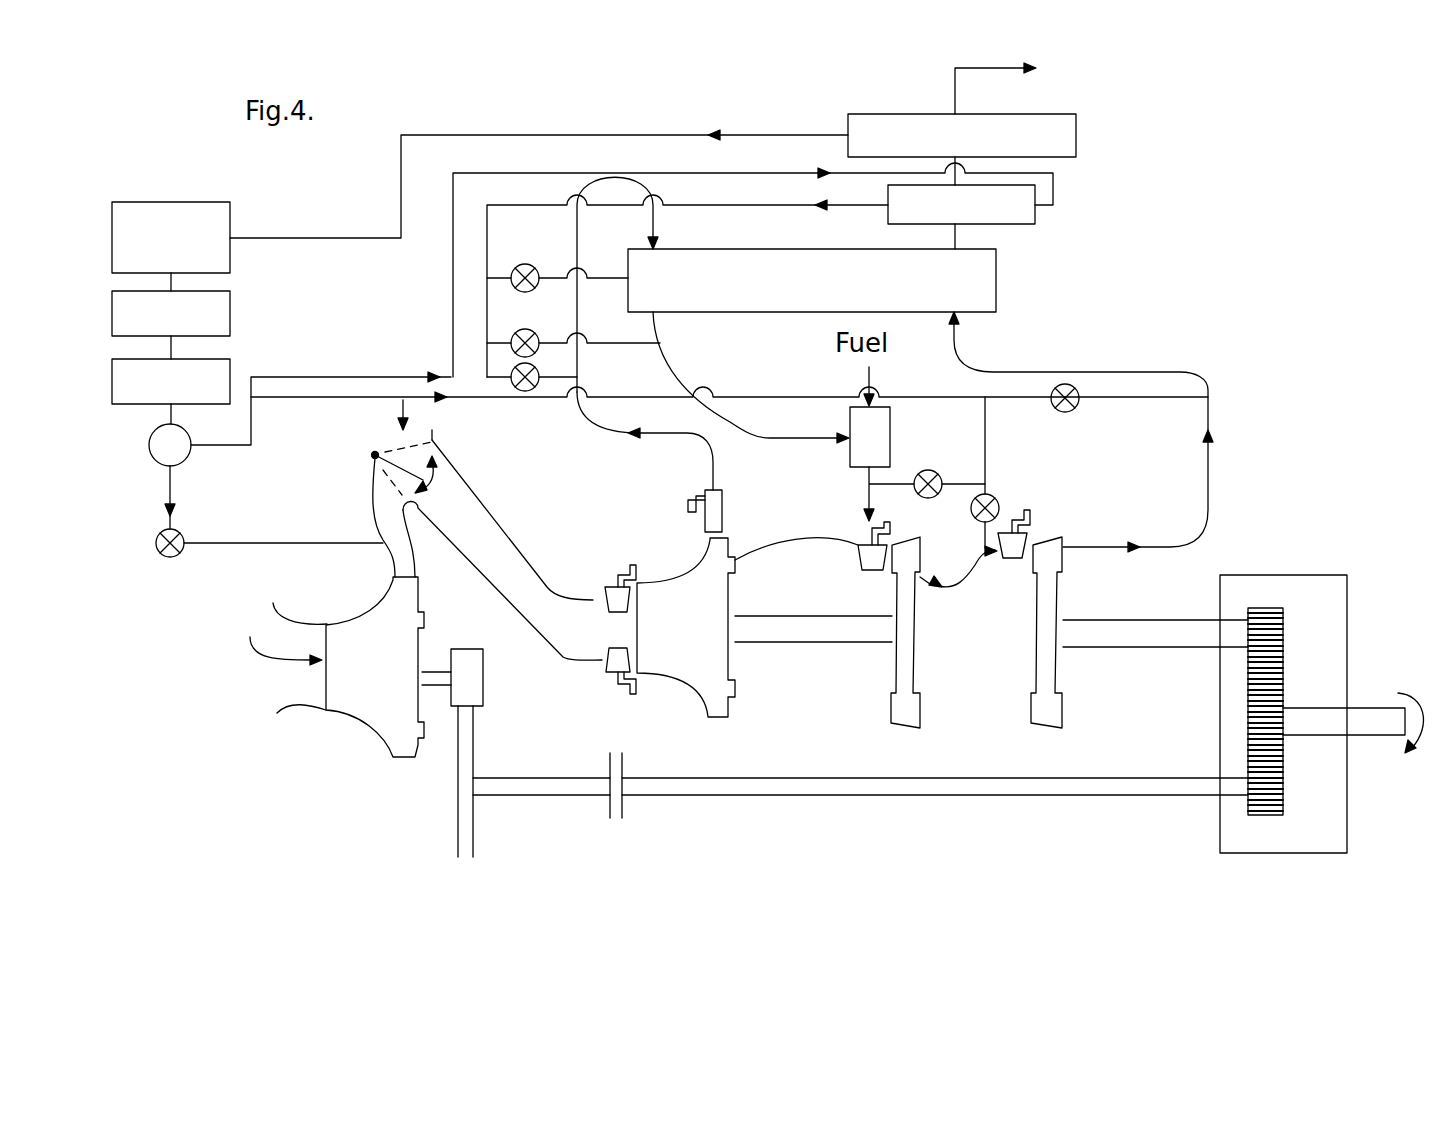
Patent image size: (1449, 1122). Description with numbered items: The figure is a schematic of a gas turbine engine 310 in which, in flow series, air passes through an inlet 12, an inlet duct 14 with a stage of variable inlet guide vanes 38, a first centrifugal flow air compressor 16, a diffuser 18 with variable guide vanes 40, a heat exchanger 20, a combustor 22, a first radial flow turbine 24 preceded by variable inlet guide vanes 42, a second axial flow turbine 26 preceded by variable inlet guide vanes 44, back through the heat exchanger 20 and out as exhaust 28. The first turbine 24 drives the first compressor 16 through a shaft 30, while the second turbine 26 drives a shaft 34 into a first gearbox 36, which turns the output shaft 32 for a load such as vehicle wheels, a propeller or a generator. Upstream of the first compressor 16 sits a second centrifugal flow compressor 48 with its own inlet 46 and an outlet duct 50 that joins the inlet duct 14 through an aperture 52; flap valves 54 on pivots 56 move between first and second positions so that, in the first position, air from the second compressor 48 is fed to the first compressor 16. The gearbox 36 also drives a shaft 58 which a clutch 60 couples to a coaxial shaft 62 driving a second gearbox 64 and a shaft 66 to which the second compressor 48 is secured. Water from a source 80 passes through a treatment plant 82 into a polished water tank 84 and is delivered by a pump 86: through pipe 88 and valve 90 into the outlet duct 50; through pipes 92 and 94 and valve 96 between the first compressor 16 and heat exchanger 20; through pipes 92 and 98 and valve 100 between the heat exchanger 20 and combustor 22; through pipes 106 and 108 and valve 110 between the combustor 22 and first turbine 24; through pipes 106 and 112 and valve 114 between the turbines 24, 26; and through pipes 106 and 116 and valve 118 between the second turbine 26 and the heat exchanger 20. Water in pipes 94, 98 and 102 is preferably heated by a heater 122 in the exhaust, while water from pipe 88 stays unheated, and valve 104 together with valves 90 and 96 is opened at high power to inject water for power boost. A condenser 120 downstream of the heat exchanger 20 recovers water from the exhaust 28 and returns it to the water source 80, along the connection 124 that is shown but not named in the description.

The inlet 12 is at (408, 446).
The inlet duct 14 is at (500, 530).
The first centrifugal flow air compressor 16 is at (735, 692).
The diffuser 18 is at (722, 495).
The heat exchanger 20 is at (996, 275).
The combustor 22 is at (890, 432).
The first radial flow turbine 24 is at (907, 728).
The second axial flow turbine 26 is at (1057, 728).
The exhaust 28 is at (1040, 75).
The shaft 30 is at (830, 615).
The output shaft 32 is at (1368, 708).
The shaft 34 is at (1195, 625).
The first gearbox 36 is at (1295, 575).
The variable inlet guide vanes 38 is at (603, 593).
The variable guide vanes 40 is at (705, 493).
The variable inlet guide vanes 42 is at (858, 547).
The variable inlet guide vanes 44 is at (1030, 527).
The inlet 46 is at (277, 715).
The second centrifugal flow compressor 48 is at (374, 727).
The outlet duct 50 is at (373, 513).
The aperture 52 is at (387, 493).
The flap valves 54 is at (388, 473).
The pivots 56 is at (372, 454).
The shaft 58 is at (960, 797).
The clutch 60 is at (624, 812).
The shaft 62 is at (510, 782).
The second gearbox 64 is at (483, 677).
The shaft 66 is at (434, 672).
The source of water 80 is at (230, 213).
The treatment plant 82 is at (230, 302).
The polished water tank 84 is at (230, 376).
The pump 86 is at (153, 467).
The pipe 88 is at (212, 547).
The valve 90 is at (160, 558).
The pipe 92 is at (407, 374).
The pipe 94 is at (557, 379).
The valve 96 is at (525, 392).
The pipe 98 is at (559, 342).
The valve 100 is at (520, 330).
The pipe 102 is at (558, 276).
The valve 104 is at (521, 266).
The pipe 106 is at (745, 397).
The pipe 108 is at (880, 485).
The valve 110 is at (931, 472).
The pipe 112 is at (988, 542).
The valve 114 is at (994, 496).
The pipe 116 is at (1143, 400).
The valve 118 is at (1070, 413).
The condenser 120 is at (1076, 137).
The heater 122 is at (1035, 222).
The signal line 124 is at (612, 135).
The gas turbine engine 310 is at (438, 337).